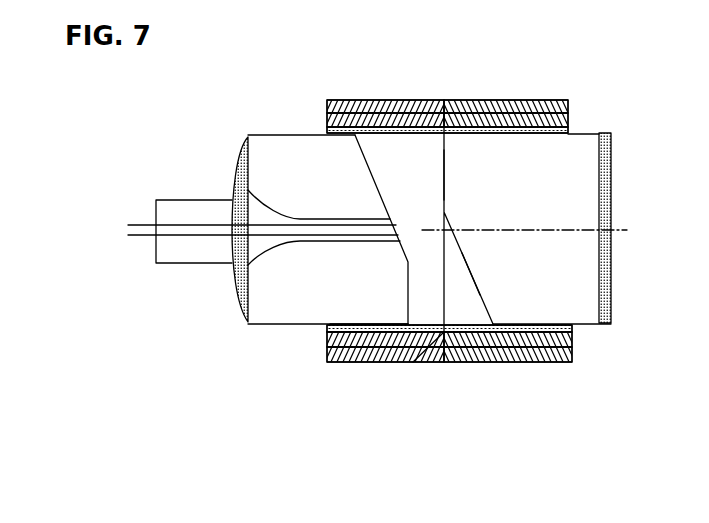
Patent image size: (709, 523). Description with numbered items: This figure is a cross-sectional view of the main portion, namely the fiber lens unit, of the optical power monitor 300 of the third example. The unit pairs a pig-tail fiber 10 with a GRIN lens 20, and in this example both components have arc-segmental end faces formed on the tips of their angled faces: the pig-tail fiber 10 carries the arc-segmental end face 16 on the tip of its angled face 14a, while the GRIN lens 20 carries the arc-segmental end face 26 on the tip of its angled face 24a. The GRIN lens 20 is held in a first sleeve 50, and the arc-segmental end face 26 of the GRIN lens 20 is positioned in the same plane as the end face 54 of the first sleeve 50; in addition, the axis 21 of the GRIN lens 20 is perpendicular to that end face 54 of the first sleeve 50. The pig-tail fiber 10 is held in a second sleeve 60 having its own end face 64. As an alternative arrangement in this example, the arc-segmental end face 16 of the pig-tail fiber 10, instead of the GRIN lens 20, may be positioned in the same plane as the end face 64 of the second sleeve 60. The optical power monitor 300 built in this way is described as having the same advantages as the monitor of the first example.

The optical power monitor 300 is at (204, 108).
The pig-tail fiber 10 is at (267, 287).
The angled face 14a is at (376, 197).
The arc-segmental end face 26 is at (445, 186).
The angled face 24a is at (462, 243).
The axis 21 is at (605, 160).
The GRIN lens 20 is at (588, 278).
The first sleeve 50 is at (563, 365).
The end face 54 is at (467, 360).
The end face 64 is at (412, 362).
The second sleeve 60 is at (328, 362).
The arc-segmental end face 16 is at (402, 311).